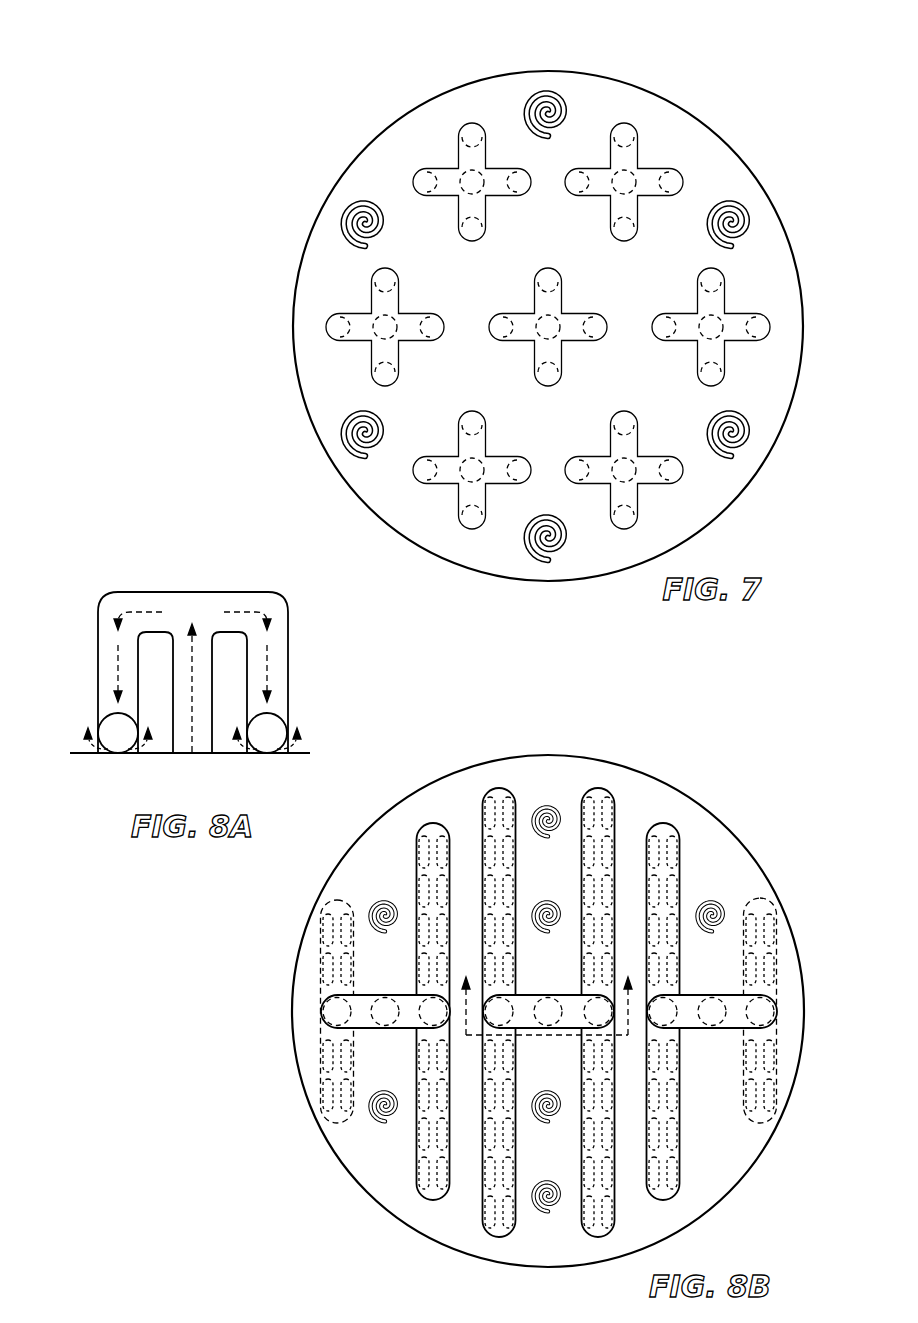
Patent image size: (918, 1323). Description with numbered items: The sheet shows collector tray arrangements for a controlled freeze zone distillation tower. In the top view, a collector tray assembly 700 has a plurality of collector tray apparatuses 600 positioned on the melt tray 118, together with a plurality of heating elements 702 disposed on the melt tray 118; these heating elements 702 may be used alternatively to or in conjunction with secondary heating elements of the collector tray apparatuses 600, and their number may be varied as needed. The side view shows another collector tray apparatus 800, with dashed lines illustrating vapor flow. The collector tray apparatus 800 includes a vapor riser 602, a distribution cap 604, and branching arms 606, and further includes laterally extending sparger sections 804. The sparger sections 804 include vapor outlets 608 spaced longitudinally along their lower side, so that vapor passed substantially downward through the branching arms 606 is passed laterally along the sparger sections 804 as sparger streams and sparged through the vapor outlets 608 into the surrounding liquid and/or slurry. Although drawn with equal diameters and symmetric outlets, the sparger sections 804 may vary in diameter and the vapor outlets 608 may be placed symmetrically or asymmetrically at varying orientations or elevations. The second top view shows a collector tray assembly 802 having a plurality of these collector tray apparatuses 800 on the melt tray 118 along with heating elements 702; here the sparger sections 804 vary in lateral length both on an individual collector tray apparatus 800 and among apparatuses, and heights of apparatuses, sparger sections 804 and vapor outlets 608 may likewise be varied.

In FIG. 7, the melt tray 118 is at (788, 292).
In FIG. 8B, the melt tray 118 is at (356, 1155).
In FIG. 7, the collector tray apparatus 600 is at (487, 211).
In FIG. 8A, the vapor riser 602 is at (213, 745).
In FIG. 8A, the distribution cap 604 is at (232, 590).
In FIG. 8A, the branching arms 606 is at (98, 667).
In FIG. 8A, the vapor outlets 608 is at (118, 755).
In FIG. 7, the collector tray assembly 700 is at (778, 92).
In FIG. 7, the heating elements 702 is at (568, 95).
In FIG. 8B, the heating elements 702 is at (546, 803).
In FIG. 8A, the collector tray apparatus 800 is at (124, 572).
In FIG. 8B, the collector tray apparatus 800 is at (365, 995).
In FIG. 8B, the collector tray assembly 802 is at (778, 772).
In FIG. 8A, the sparger sections 804 is at (105, 718).
In FIG. 8B, the sparger sections 804 is at (420, 832).